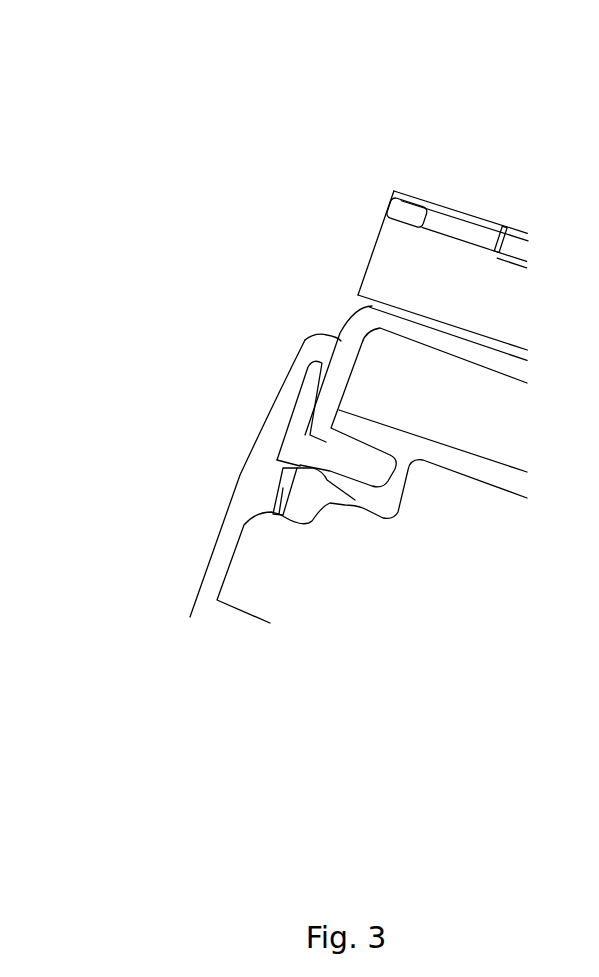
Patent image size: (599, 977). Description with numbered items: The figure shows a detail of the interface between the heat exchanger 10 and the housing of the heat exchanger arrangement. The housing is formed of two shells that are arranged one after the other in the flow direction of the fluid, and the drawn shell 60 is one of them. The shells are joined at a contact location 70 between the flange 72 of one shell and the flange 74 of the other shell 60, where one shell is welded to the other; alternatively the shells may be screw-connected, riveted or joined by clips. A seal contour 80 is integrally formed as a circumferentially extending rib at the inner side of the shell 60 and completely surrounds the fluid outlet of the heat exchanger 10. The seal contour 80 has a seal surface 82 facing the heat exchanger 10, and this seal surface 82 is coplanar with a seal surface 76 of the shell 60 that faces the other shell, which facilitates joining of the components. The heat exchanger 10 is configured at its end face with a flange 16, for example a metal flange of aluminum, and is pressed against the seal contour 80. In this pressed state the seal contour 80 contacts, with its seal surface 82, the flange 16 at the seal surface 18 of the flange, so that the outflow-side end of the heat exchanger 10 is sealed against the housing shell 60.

The heat exchanger 10 is at (484, 218).
The flange 16 is at (353, 322).
The seal surface 18 is at (347, 352).
The shell 60 is at (188, 602).
The contact location 70 is at (280, 513).
The flange 72 is at (310, 497).
The flange 74 is at (277, 490).
The seal surface 76 is at (290, 478).
The seal contour 80 is at (297, 365).
The seal surface 82 is at (343, 348).